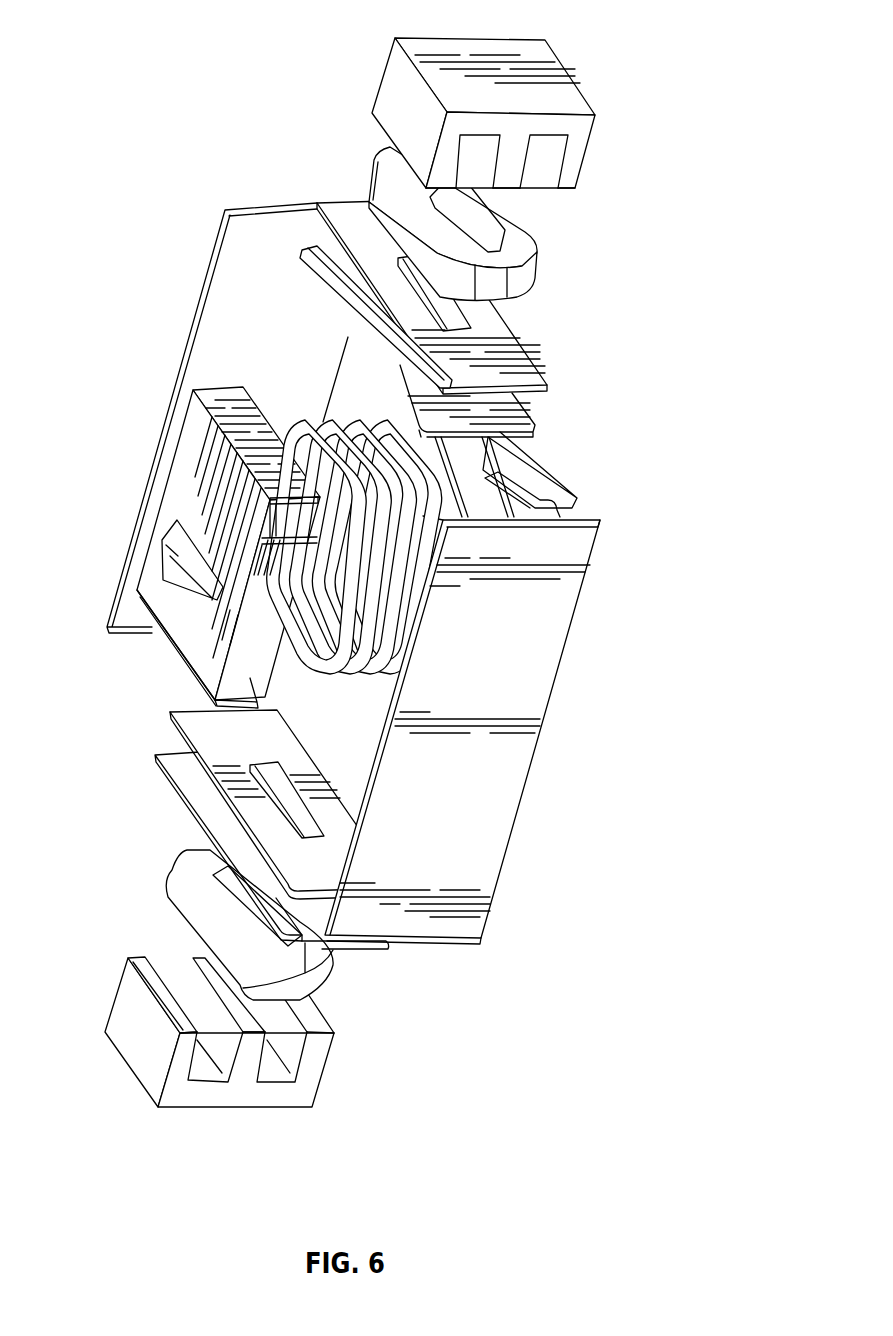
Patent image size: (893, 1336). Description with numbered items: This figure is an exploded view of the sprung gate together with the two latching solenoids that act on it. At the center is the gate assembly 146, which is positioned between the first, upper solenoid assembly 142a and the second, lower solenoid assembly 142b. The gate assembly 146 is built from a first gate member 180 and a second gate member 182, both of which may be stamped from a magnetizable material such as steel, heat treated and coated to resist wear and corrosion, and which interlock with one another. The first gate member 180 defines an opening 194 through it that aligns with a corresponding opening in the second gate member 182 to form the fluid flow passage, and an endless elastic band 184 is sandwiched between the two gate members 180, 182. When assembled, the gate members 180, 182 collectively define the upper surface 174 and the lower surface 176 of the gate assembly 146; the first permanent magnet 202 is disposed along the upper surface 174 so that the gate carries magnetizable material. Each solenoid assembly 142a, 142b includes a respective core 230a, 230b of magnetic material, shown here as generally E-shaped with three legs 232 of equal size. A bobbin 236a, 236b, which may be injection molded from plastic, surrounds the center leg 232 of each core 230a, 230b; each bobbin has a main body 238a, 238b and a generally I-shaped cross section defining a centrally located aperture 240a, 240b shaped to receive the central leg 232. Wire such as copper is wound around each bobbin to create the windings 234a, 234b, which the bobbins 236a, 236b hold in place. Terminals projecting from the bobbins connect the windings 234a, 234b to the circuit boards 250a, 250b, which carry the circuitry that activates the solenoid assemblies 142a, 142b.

The first solenoid assembly 142a is at (558, 154).
The second solenoid assembly 142b is at (320, 996).
The gate assembly 146 is at (481, 318).
The upper surface 174 is at (543, 470).
The lower surface 176 is at (172, 643).
The first gate member 180 is at (201, 547).
The second gate member 182 is at (577, 507).
The endless elastic band 184 is at (368, 427).
The opening 194 is at (177, 587).
The first permanent magnet 202 is at (318, 248).
The core 230a is at (508, 37).
The core 230b is at (227, 1107).
The legs 232 is at (396, 78).
The winding 234a is at (533, 258).
The winding 234b is at (315, 983).
The bobbin 236a is at (432, 297).
The bobbin 236b is at (245, 789).
The main body 238a is at (527, 413).
The main body 238b is at (328, 858).
The aperture 240a is at (455, 296).
The aperture 240b is at (283, 797).
The circuit board 250a is at (222, 265).
The circuit board 250b is at (535, 728).